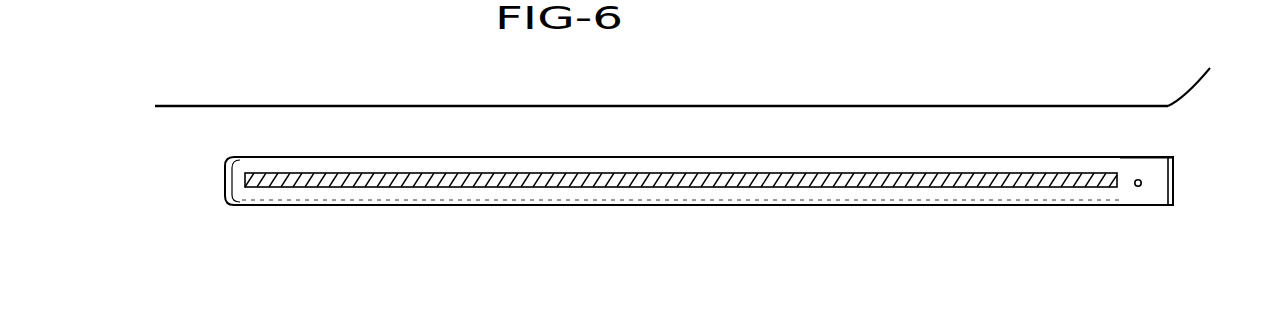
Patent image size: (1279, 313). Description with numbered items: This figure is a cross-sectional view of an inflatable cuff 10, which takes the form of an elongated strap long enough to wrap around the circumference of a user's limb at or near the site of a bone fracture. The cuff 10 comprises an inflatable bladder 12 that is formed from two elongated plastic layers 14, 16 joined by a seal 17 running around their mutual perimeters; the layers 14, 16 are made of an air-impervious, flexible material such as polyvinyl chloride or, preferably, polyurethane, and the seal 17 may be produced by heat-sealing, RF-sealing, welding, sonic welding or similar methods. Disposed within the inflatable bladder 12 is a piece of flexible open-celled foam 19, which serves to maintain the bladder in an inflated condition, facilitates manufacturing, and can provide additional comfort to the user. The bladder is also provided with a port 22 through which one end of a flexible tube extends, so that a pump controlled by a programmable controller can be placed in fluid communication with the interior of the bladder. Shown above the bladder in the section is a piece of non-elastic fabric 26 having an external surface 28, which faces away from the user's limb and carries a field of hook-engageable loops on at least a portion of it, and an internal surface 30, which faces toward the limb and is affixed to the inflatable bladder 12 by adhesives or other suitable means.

The cuff 10 is at (1050, 53).
The inflatable bladder 12 is at (1158, 187).
The plastic layer 14 is at (1125, 157).
The plastic layer 16 is at (1122, 205).
The seal 17 is at (1173, 168).
The flexible open-celled foam 19 is at (820, 183).
The port 22 is at (1140, 186).
The non-elastic fabric 26 is at (1209, 75).
The external surface 28 is at (178, 105).
The internal surface 30 is at (200, 107).